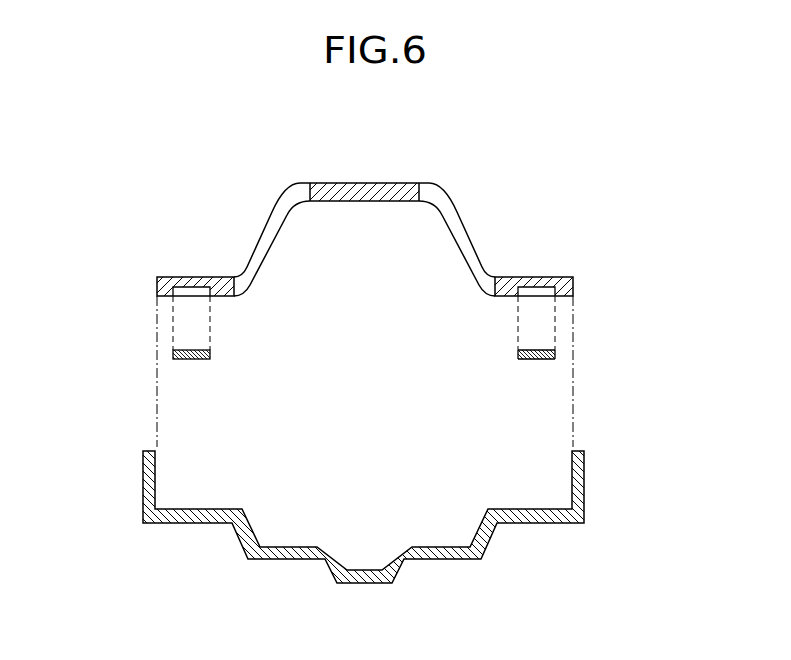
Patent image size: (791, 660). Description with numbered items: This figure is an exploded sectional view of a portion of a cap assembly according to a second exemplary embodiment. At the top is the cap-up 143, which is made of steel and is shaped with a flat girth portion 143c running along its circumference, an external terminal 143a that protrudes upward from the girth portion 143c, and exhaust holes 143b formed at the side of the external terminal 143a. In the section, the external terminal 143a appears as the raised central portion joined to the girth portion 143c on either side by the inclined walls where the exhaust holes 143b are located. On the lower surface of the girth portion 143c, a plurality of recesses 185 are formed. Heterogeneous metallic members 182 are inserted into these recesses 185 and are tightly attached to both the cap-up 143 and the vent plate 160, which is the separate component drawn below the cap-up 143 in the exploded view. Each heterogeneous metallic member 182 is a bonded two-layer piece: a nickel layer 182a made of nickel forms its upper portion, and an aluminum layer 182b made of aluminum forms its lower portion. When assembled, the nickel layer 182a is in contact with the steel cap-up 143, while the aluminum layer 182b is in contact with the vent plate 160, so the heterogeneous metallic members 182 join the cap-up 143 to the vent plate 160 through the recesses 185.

The cap-up 143 is at (405, 208).
The external terminal 143a is at (370, 183).
The exhaust holes 143b is at (463, 222).
The girth portion 143c is at (188, 284).
The recesses 185 is at (190, 290).
The heterogeneous metallic members 182 is at (405, 350).
The nickel layer 182a is at (546, 349).
The aluminum layer 182b is at (546, 361).
The vent plate 160 is at (584, 482).